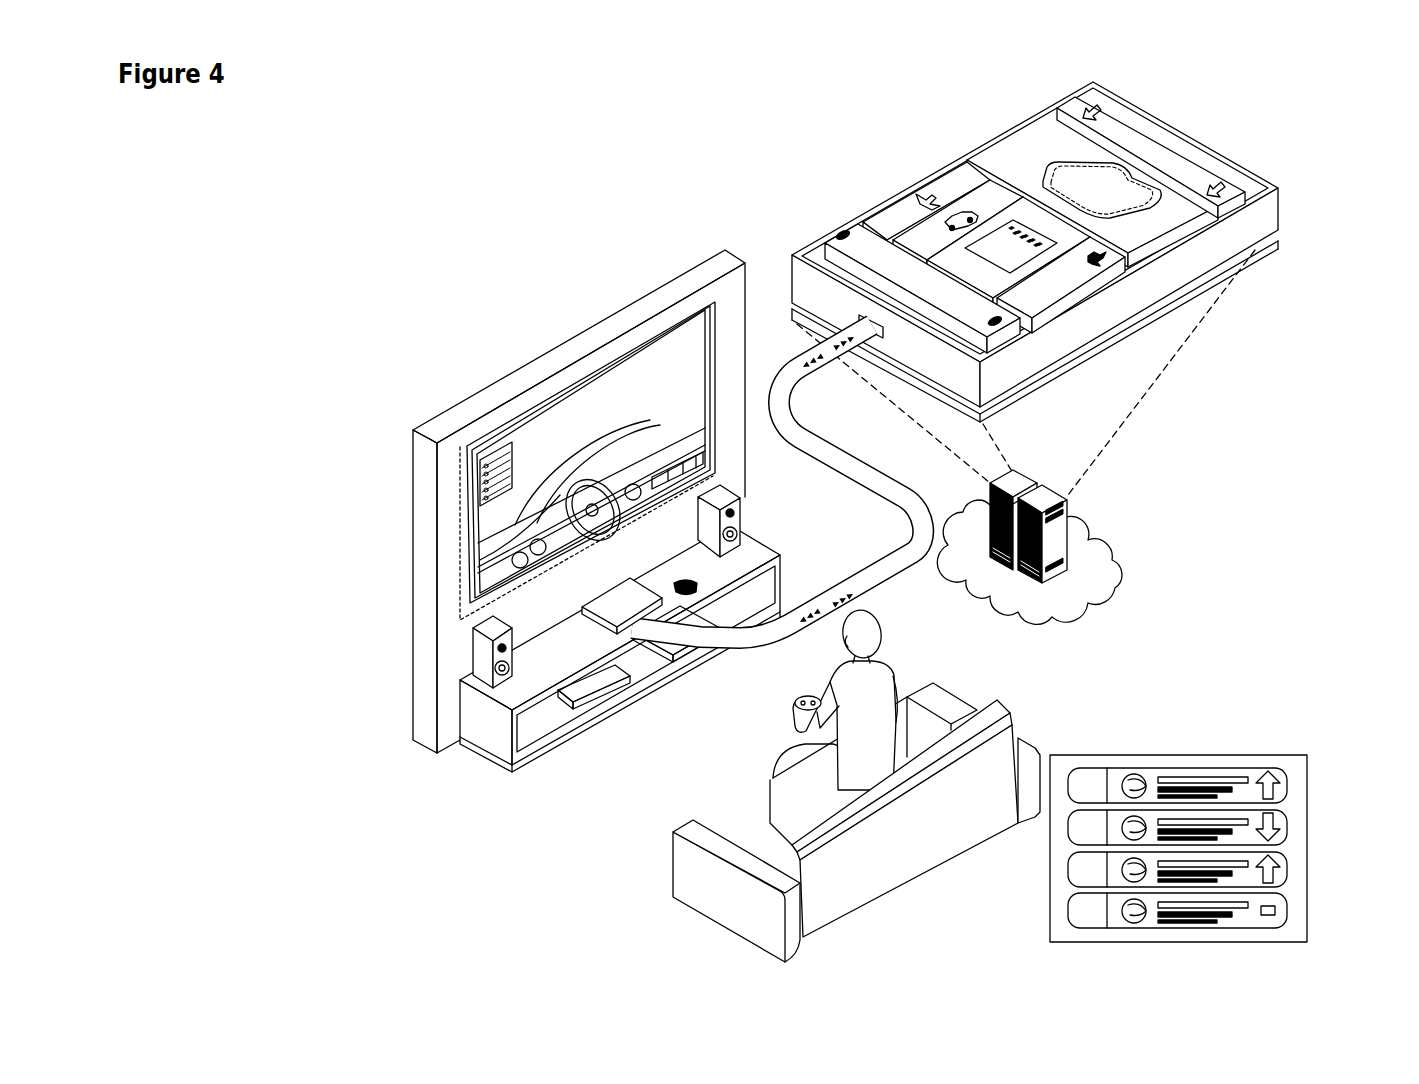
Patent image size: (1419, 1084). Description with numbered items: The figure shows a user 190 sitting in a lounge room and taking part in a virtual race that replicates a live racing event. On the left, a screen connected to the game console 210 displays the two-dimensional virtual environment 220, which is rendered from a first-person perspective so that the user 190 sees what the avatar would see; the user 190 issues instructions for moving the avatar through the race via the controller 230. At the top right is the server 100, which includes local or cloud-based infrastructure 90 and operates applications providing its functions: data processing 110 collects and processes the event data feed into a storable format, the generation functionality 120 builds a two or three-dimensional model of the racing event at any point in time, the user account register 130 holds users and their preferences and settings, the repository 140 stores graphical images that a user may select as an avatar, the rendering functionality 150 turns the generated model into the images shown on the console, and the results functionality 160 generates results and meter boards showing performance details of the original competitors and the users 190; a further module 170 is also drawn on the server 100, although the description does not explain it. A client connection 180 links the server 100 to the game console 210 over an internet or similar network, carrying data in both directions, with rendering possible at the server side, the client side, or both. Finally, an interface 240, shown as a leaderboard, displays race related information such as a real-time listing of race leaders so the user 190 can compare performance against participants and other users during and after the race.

The infrastructure 90 is at (1250, 265).
The server 100 is at (1272, 216).
The data processing 110 is at (1137, 137).
The generation functionality 120 is at (1040, 135).
The user account register 130 is at (883, 217).
The repository of graphical images 140 is at (960, 210).
The rendering functionality 150 is at (1023, 213).
The results and meter boards functionality 160 is at (1077, 270).
The track module 170 is at (862, 250).
The client connection 180 is at (827, 350).
The user 190 is at (870, 697).
The game console 210 is at (625, 605).
The virtual environment 220 is at (540, 437).
The controller 230 is at (795, 699).
The interface 240 is at (1190, 755).